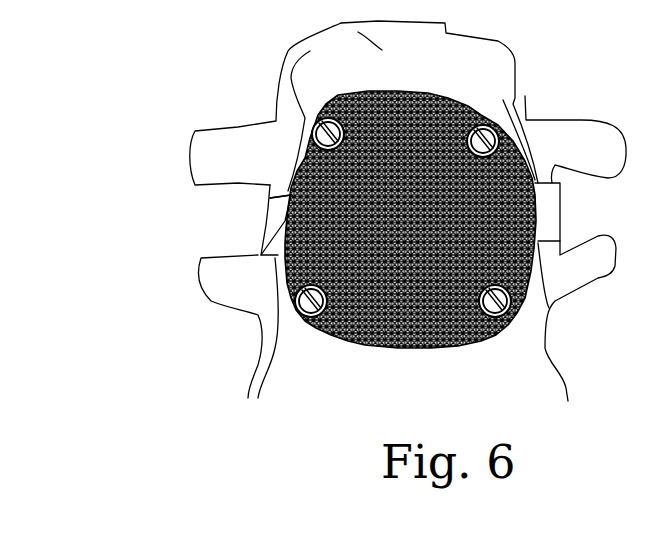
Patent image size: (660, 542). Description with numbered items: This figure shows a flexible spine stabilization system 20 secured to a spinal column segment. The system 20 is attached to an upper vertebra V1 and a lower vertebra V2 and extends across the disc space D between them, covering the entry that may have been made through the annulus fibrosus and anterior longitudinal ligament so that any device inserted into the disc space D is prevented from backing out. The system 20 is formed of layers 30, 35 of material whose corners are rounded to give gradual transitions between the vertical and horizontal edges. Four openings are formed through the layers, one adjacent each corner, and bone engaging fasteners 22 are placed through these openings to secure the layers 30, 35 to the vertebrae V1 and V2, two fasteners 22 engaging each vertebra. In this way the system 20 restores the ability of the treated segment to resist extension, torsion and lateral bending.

The spine stabilization system 20 is at (283, 148).
The bone engaging fasteners 22 is at (307, 112).
The disc space D is at (257, 203).
The layer 30 is at (277, 213).
The layer 35 is at (167, 233).
The vertebra V1 is at (424, 58).
The vertebra V2 is at (420, 390).